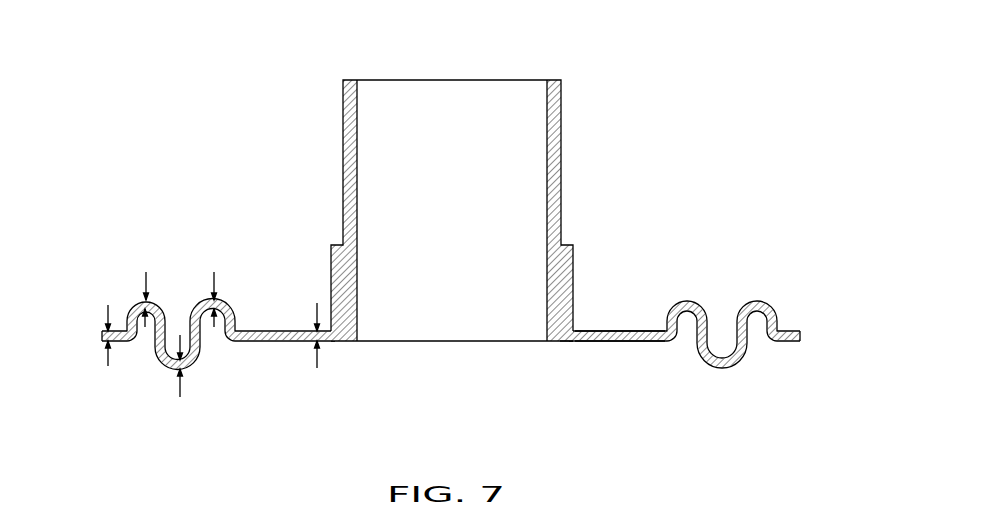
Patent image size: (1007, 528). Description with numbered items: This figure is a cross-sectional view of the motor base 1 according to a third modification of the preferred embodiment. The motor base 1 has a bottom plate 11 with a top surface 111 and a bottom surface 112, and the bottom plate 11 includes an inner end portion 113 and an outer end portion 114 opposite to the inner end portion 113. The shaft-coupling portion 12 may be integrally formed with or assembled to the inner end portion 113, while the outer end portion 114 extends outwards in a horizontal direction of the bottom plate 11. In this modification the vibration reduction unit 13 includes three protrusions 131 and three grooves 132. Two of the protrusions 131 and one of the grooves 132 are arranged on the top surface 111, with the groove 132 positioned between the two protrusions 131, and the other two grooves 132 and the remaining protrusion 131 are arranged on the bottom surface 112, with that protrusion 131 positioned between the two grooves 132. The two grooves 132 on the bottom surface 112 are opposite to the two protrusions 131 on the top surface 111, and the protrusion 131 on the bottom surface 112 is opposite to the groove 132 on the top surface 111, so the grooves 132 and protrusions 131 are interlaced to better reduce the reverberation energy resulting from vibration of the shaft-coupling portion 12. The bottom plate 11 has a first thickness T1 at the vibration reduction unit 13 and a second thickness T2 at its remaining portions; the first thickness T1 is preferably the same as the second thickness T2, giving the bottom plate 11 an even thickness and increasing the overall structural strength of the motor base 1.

The motor base 1 is at (429, 256).
The bottom plate 11 is at (429, 382).
The top surface 111 is at (605, 330).
The bottom surface 112 is at (598, 341).
The inner end portion 113 is at (567, 350).
The outer end portion 114 is at (97, 358).
The shaft-coupling portion 12 is at (348, 110).
The vibration reduction unit 13 is at (233, 409).
The protrusion 131 is at (183, 407).
The groove 132 is at (143, 350).
The first thickness T1 is at (180, 336).
The second thickness T2 is at (197, 329).